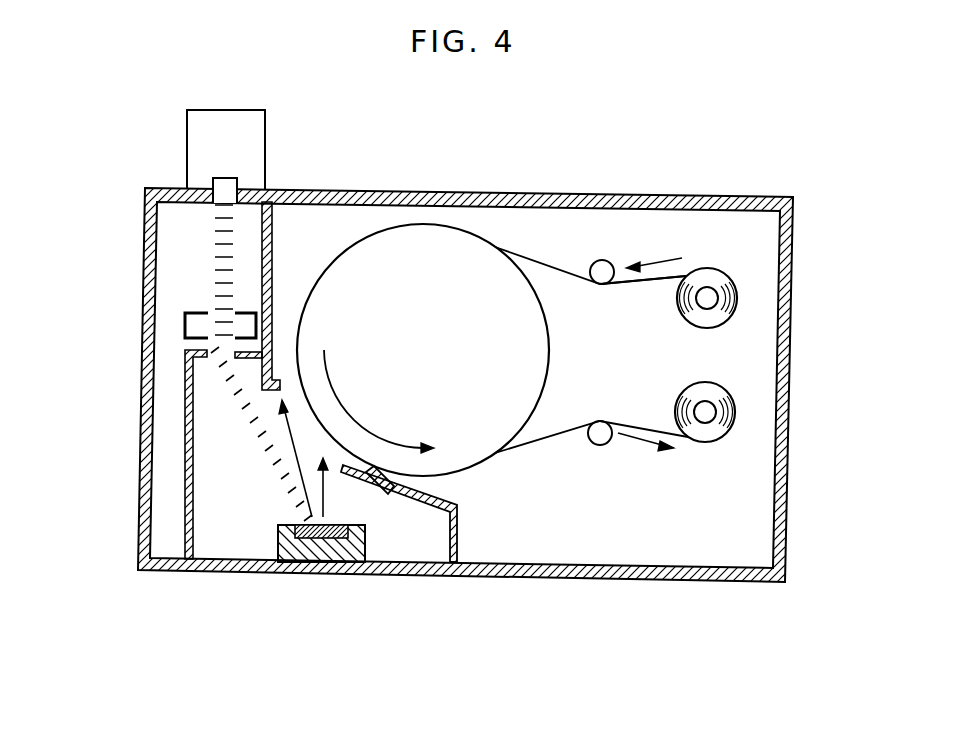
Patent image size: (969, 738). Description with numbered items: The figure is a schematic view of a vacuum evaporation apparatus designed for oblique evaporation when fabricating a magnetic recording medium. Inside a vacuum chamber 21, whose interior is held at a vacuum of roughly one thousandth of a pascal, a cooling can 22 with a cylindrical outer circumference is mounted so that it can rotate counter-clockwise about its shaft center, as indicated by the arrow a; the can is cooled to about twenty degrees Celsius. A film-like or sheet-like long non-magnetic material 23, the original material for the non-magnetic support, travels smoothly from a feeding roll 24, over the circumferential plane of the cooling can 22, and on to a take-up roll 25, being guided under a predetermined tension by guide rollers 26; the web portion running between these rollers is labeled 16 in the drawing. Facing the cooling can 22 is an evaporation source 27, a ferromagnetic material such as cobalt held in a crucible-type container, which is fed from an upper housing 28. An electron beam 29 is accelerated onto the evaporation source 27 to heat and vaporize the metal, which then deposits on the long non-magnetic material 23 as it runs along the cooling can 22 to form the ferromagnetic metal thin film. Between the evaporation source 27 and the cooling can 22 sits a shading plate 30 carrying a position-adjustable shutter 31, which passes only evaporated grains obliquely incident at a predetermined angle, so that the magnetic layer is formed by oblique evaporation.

The recording medium 16 is at (634, 286).
The vacuum chamber 21 is at (607, 535).
The cooling can 22 is at (405, 247).
The long non-magnetic material 23 is at (533, 250).
The feeding roll 24 is at (704, 288).
The take-up roll 25 is at (703, 432).
The guide rollers 26 is at (602, 260).
The evaporation source 27 is at (315, 562).
The toner container 28 is at (222, 126).
The electron beam 29 is at (213, 236).
The shading plate 30 is at (418, 496).
The shutter 31 is at (370, 487).
The arrow a is at (347, 417).